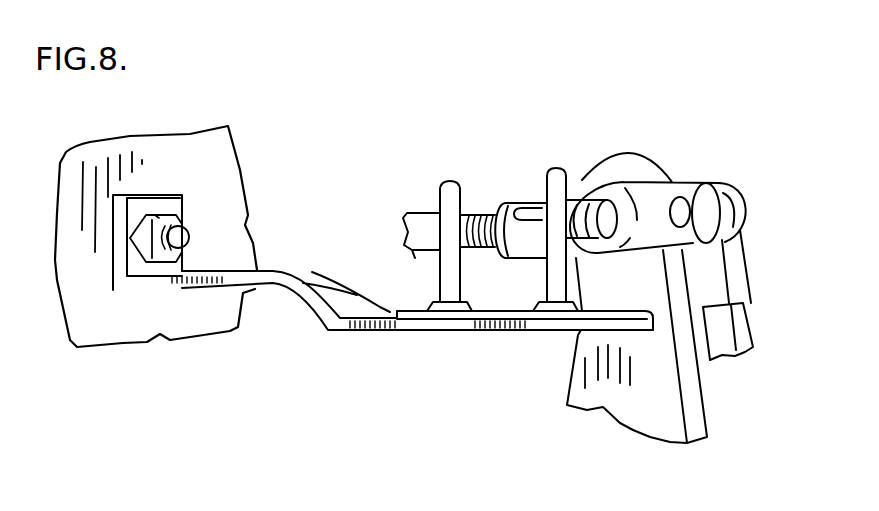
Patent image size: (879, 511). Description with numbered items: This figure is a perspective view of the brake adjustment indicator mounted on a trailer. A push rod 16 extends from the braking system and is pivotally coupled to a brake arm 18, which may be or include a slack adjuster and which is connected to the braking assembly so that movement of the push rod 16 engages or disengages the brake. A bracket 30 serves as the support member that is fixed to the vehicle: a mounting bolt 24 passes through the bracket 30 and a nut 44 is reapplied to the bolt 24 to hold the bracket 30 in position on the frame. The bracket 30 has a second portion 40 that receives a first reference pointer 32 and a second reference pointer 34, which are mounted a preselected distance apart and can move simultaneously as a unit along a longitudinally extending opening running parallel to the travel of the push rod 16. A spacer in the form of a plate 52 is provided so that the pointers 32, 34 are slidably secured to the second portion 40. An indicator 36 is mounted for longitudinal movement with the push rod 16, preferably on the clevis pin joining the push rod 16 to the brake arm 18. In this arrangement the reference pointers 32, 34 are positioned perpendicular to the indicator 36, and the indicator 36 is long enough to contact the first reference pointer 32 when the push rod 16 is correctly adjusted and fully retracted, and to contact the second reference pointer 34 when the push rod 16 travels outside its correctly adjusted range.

The push rod 16 is at (422, 211).
The brake arm 18 is at (630, 407).
The mounting bolt 24 is at (186, 229).
The bracket 30 is at (257, 278).
The first reference pointer 32 is at (448, 180).
The second reference pointer 34 is at (563, 168).
The indicator 36 is at (532, 201).
The second portion 40 is at (420, 333).
The nut 44 is at (158, 217).
The plate 52 is at (460, 333).